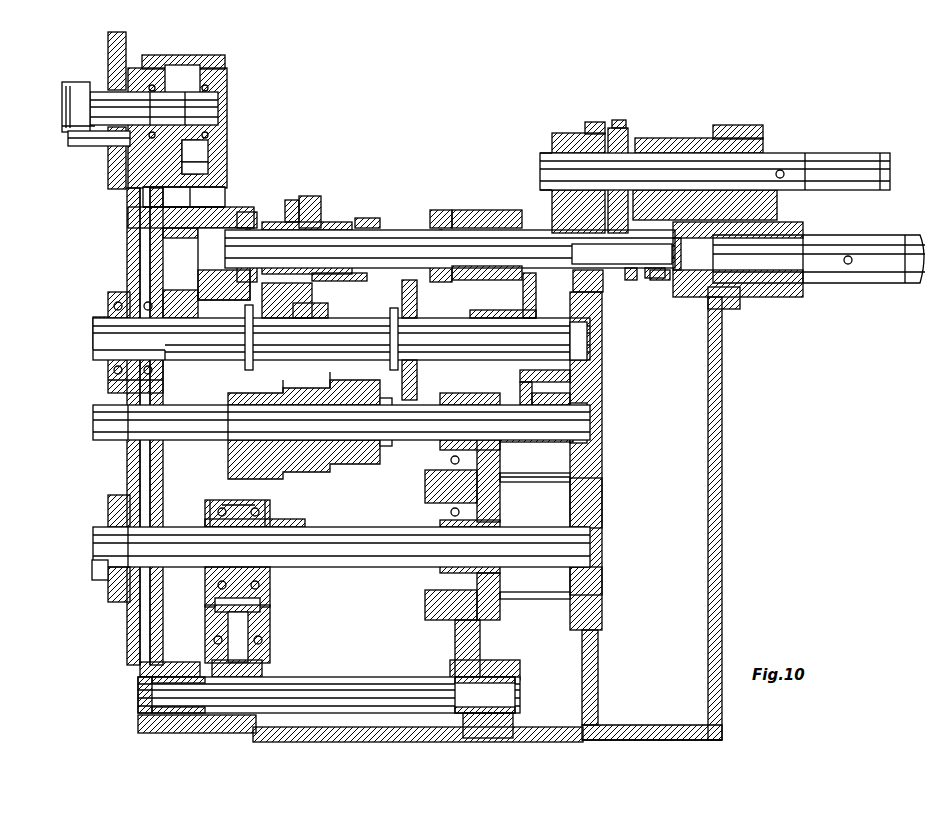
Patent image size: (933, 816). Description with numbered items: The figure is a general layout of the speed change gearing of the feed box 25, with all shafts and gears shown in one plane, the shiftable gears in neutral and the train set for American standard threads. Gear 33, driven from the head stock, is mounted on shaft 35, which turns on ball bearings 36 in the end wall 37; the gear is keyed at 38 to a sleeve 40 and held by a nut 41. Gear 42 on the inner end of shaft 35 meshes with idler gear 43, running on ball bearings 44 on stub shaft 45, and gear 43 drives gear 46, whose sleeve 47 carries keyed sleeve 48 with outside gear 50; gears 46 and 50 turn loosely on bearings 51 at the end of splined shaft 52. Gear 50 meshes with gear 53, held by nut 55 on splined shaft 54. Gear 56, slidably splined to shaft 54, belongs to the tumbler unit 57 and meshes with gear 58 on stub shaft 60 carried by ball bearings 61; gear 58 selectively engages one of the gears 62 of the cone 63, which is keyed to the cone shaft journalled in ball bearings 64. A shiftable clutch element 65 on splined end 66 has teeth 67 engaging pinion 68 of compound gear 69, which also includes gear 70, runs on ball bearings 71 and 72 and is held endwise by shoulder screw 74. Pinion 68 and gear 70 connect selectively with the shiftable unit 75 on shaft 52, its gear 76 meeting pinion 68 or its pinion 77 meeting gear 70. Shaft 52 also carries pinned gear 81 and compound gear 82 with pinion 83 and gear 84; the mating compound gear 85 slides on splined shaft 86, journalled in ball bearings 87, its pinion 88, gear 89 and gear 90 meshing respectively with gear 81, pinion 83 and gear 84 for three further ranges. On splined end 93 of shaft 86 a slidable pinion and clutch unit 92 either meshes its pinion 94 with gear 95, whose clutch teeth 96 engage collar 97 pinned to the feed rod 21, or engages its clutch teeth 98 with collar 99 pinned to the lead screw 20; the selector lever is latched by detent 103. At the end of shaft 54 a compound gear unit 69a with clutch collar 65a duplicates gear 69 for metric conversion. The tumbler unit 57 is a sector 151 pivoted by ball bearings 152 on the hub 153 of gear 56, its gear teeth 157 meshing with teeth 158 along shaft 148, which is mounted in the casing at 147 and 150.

The lead screw 20 is at (888, 245).
The feed rod 21 is at (845, 176).
The feed box 25 is at (126, 248).
The gear 33 is at (108, 50).
The shaft 35 is at (218, 106).
The ball bearings 36 is at (178, 70).
The end wall 37 is at (160, 190).
The key 38 is at (100, 146).
The sleeve 40 is at (70, 128).
The nut 41 is at (80, 134).
The gear 42 is at (208, 151).
The idler gear 43 is at (208, 168).
The ball bearings 44 is at (212, 188).
The stub shaft 45 is at (155, 205).
The gear 46 is at (176, 290).
The sleeve 47 is at (126, 297).
The sleeve 48 is at (108, 370).
The gear 50 is at (112, 378).
The bearings 51 is at (100, 314).
The splined shaft 52 is at (232, 348).
The gear 53 is at (108, 500).
The splined shaft 54 is at (185, 530).
The nut 55 is at (95, 560).
The gear 56 is at (190, 432).
The tumbler unit 57 is at (275, 625).
The gear 58 is at (270, 590).
The stub shaft 60 is at (262, 605).
The ball bearings 61 is at (205, 600).
The gears 62 is at (365, 480).
The cone of gears 63 is at (385, 465).
The ball bearings 64 is at (602, 387).
The clutch element 65 is at (520, 445).
The clutch collar 65a is at (602, 578).
The splined end 66 is at (602, 423).
The teeth 67 is at (540, 455).
The pinion 68 is at (512, 478).
The compound gear 69 is at (535, 404).
The compound gear unit 69a is at (455, 628).
The gear 70 is at (520, 482).
The ball bearing 71 is at (440, 445).
The ball bearing 72 is at (425, 470).
The shoulder screw 74 is at (602, 497).
The shiftable compound gear and pinion unit 75 is at (600, 298).
The gear 76 is at (535, 390).
The pinion 77 is at (482, 312).
The gear 81 is at (400, 305).
The compound gear 82 is at (328, 312).
The pinion 83 is at (310, 310).
The gear 84 is at (250, 320).
The compound gear 85 is at (332, 224).
The splined shaft 86 is at (400, 240).
The bearing 87 is at (252, 222).
The pinion 88 is at (368, 218).
The gear 89 is at (312, 200).
The gear 90 is at (292, 200).
The slidable pinion and clutch unit 92 is at (632, 282).
The splined end 93 is at (625, 262).
The pinion 94 is at (652, 282).
The gear 95 is at (620, 120).
The clutch teeth 96 is at (636, 150).
The collar 97 is at (658, 150).
The clutch teeth 98 is at (690, 298).
The collar 99 is at (715, 300).
The detent 103 is at (662, 282).
The bearing 147 is at (455, 722).
The shaft 148 is at (365, 740).
The bearing 150 is at (175, 716).
The sector 151 is at (232, 505).
The ball bearings 152 is at (210, 505).
The hub 153 is at (285, 522).
The gear teeth 157 is at (262, 672).
The teeth 158 is at (350, 690).